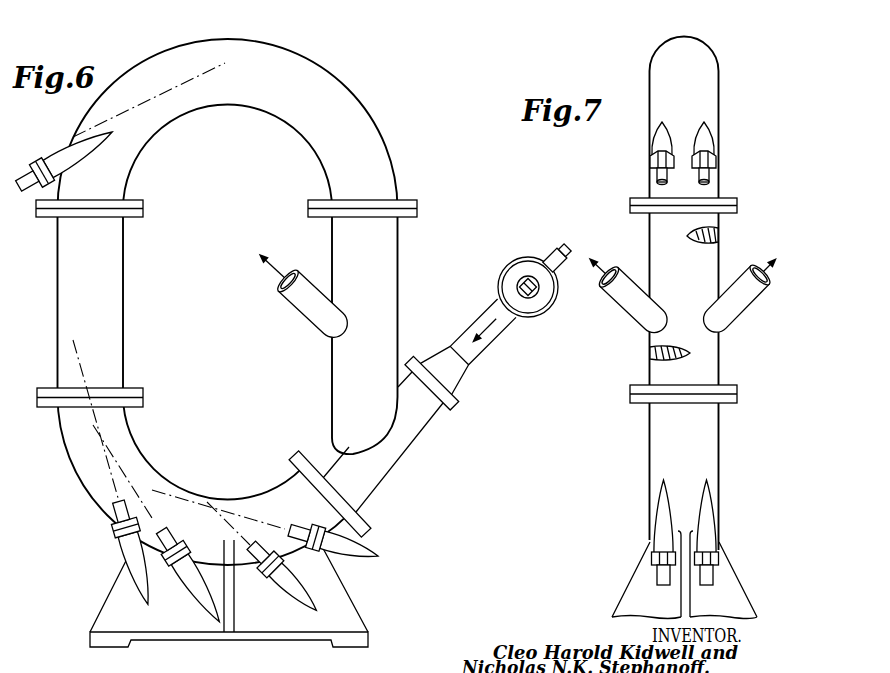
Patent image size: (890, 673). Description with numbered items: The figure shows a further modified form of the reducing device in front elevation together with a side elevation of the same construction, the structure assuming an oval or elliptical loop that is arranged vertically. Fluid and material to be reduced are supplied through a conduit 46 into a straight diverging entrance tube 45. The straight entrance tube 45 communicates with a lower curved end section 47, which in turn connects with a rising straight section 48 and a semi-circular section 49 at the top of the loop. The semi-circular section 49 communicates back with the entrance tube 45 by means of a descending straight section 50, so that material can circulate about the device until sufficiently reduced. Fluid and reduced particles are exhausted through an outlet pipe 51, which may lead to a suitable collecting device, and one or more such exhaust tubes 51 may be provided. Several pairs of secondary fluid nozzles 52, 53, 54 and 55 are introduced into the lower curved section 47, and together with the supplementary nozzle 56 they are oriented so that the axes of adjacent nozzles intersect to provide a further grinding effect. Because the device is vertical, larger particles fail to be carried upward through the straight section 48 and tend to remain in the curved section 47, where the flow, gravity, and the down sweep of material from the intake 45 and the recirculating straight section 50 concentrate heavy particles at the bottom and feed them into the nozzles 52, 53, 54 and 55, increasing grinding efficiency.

In FIG. 6, the straight diverging entrance tube 45 is at (421, 427).
In FIG. 6, the conduit 46 is at (482, 318).
In FIG. 6, the curved end section 47 is at (252, 498).
In FIG. 7, the curved end section 47 is at (668, 433).
In FIG. 6, the straight section 48 is at (82, 308).
In FIG. 7, the straight section 48 is at (690, 234).
In FIG. 6, the semi-circular section 49 is at (240, 93).
In FIG. 7, the semi-circular section 49 is at (693, 75).
In FIG. 6, the straight section 50 is at (385, 268).
In FIG. 7, the straight section 50 is at (673, 257).
In FIG. 6, the outlet pipe 51 is at (318, 313).
In FIG. 7, the outlet pipe 51 is at (645, 313).
In FIG. 6, the secondary fluid nozzle 52 is at (330, 547).
In FIG. 6, the secondary fluid nozzle 53 is at (277, 572).
In FIG. 6, the secondary fluid nozzle 54 is at (180, 567).
In FIG. 6, the secondary fluid nozzle 55 is at (125, 538).
In FIG. 7, the secondary fluid nozzle 55 is at (663, 515).
In FIG. 6, the supplementary nozzle 56 is at (60, 157).
In FIG. 7, the supplementary nozzle 56 is at (705, 144).